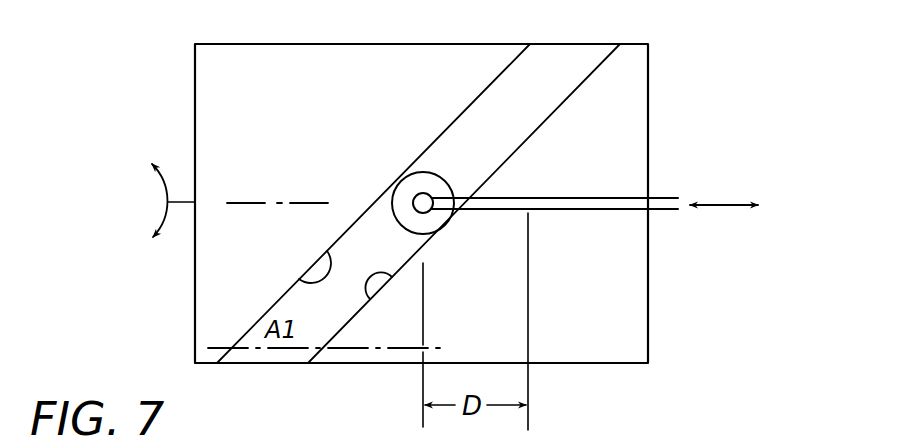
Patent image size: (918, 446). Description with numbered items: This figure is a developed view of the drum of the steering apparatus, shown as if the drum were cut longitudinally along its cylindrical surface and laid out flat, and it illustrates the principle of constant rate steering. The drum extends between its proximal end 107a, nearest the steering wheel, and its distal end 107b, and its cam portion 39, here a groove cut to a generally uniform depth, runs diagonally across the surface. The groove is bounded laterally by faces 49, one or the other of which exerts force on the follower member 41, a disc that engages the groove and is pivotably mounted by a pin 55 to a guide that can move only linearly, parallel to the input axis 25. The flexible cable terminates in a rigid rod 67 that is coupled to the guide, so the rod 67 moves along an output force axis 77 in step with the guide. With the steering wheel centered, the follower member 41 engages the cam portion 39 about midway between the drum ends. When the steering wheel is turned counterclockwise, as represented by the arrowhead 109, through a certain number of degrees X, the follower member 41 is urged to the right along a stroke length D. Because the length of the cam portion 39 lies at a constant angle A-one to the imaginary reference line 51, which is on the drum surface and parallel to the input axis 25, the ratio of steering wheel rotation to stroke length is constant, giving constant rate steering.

The input axis 25 is at (227, 203).
The cam portion 39 is at (562, 62).
The follower member 41 is at (405, 195).
The faces 49 is at (298, 278).
The imaginary reference line 51 is at (433, 347).
The pin 55 is at (425, 193).
The rigid rod 67 is at (558, 198).
The output force axis 77 is at (715, 204).
The proximal end 107a is at (195, 300).
The distal end 107b is at (647, 320).
The arrowhead 109 is at (166, 187).